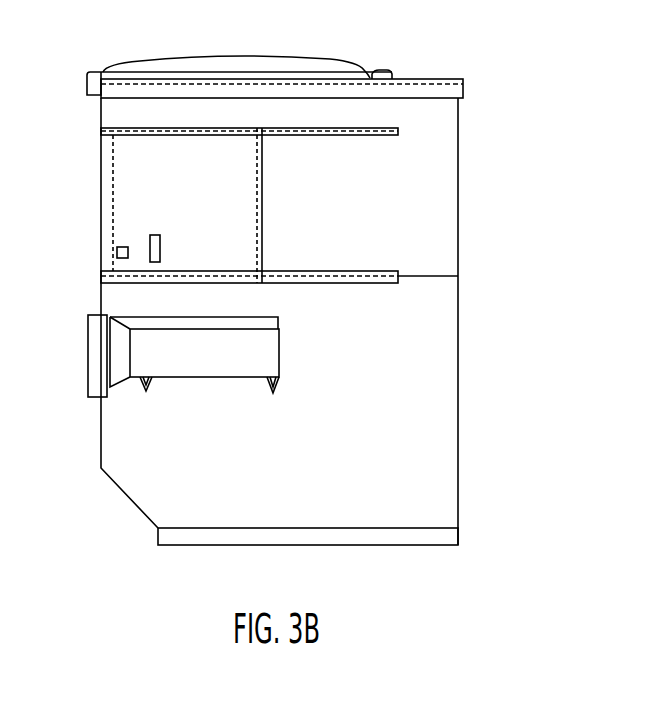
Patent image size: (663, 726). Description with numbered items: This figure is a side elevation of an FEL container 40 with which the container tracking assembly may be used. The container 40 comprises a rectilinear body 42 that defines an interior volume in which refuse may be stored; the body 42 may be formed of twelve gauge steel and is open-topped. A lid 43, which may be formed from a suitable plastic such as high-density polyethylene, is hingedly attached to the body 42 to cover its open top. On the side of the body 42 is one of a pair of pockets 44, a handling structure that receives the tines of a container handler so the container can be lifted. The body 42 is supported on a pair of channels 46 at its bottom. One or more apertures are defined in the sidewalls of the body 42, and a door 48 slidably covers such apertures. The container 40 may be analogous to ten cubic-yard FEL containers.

The FEL container 40 is at (512, 62).
The rectilinear body 42 is at (438, 376).
The lid 43 is at (238, 56).
The pocket 44 is at (255, 352).
The channel 46 is at (238, 535).
The door 48 is at (233, 217).